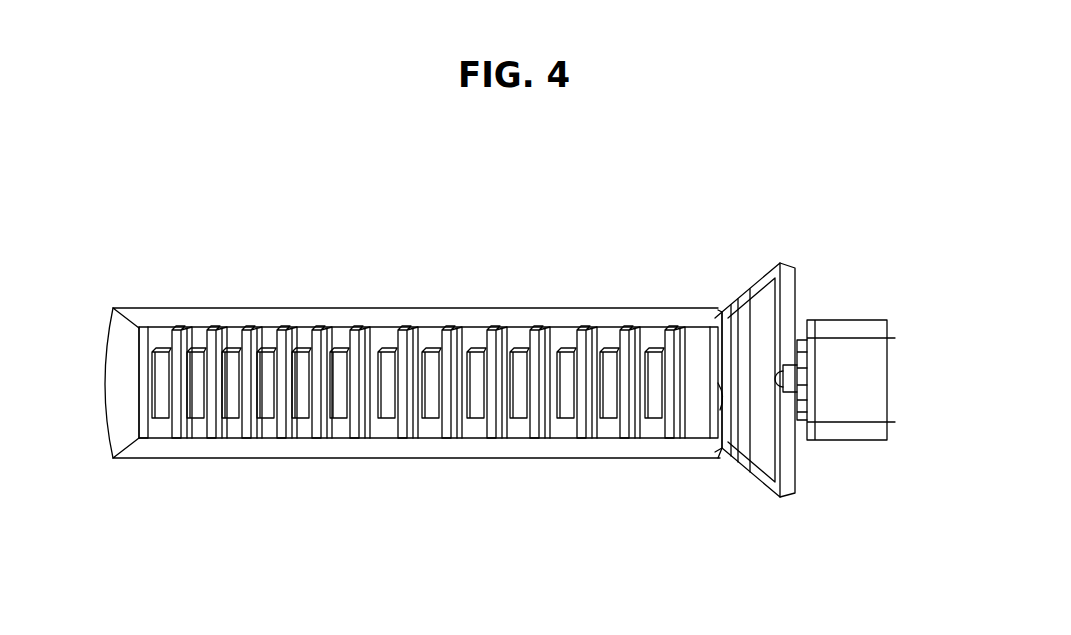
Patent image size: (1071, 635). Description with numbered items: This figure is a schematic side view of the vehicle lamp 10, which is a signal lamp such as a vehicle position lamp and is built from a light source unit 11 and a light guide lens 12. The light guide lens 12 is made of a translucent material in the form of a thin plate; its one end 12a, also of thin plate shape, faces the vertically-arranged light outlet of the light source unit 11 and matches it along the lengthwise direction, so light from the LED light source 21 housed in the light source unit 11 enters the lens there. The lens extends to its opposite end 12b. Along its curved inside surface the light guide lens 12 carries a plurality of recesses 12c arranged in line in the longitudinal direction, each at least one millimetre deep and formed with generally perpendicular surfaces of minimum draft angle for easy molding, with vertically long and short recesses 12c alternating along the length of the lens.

The vehicle lamp 10 is at (825, 222).
The light source unit 11 is at (810, 460).
The light guide lens 12 is at (524, 292).
The one end 12a is at (720, 423).
The curved end surface 12b is at (107, 437).
The recesses 12c is at (350, 407).
The LED light source 21 is at (779, 374).